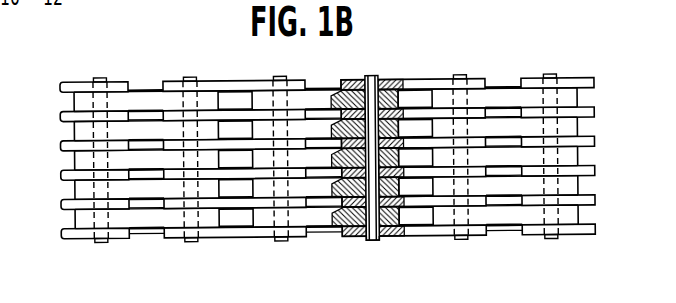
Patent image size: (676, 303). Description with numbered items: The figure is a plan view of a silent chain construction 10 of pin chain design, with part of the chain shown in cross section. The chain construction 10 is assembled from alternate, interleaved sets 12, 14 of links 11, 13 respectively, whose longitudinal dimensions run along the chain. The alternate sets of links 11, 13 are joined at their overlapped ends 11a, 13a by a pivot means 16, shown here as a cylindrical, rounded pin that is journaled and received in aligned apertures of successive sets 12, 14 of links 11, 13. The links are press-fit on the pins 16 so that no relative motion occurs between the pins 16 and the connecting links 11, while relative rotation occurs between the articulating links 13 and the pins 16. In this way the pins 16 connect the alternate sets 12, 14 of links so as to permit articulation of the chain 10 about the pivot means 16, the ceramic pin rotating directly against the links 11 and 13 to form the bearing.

The chain construction 10 is at (140, 78).
The connecting link 11 is at (437, 231).
The overlapped end of link 11 11a is at (362, 240).
The set of links 12 is at (73, 81).
The articulating link 13 is at (322, 229).
The overlapped end of link 13 13a is at (338, 232).
The set of links 14 is at (147, 88).
The pivot means 16 is at (373, 78).